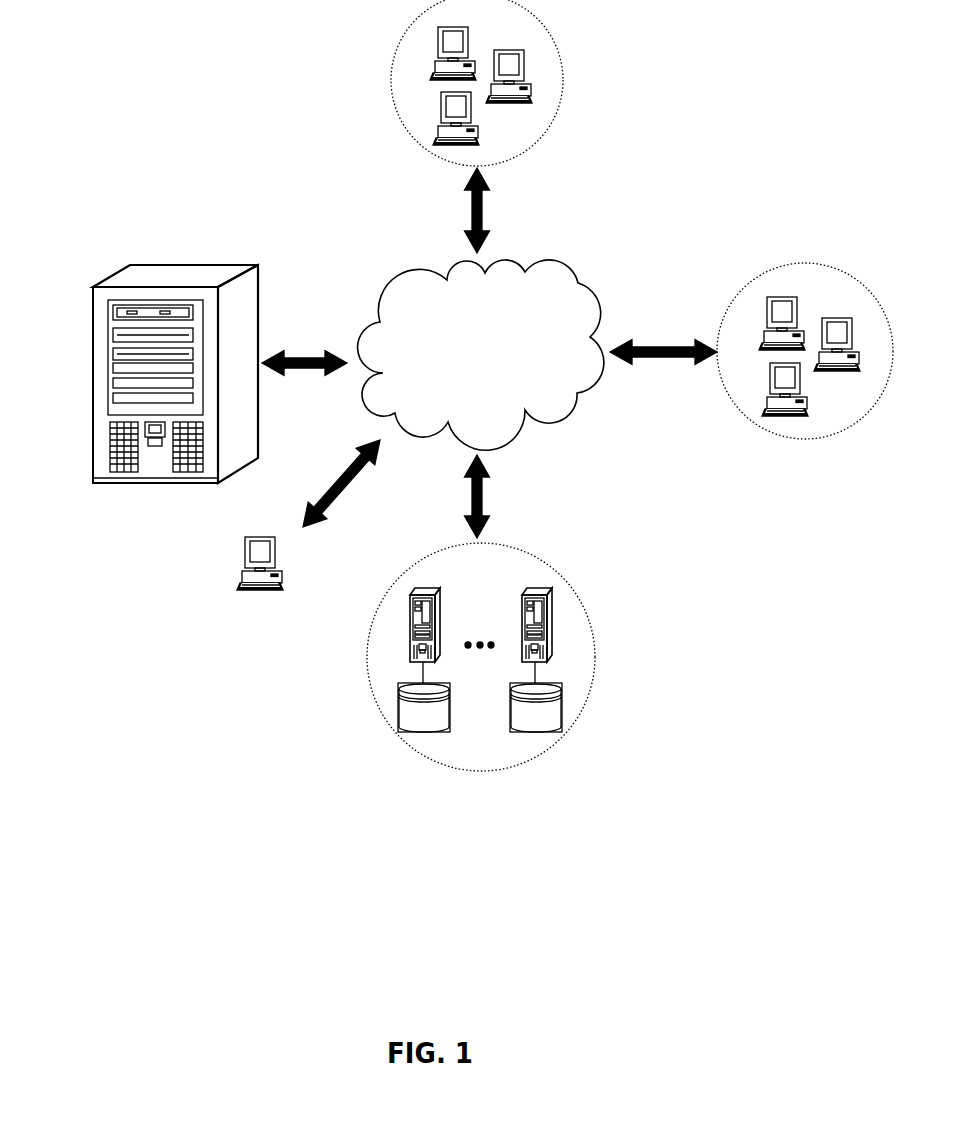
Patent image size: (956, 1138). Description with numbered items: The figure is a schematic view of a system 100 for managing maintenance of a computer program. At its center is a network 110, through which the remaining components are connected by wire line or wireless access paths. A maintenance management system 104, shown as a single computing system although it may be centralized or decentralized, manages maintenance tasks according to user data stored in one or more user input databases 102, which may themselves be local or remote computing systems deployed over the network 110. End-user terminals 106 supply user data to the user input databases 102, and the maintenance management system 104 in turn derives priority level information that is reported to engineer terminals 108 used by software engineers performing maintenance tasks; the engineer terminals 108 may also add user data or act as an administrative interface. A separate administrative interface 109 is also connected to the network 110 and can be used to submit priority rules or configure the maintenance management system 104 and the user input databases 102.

The system 100 is at (612, 828).
The user input databases 102 is at (375, 694).
The maintenance management system 104 is at (217, 285).
The end-user terminals 106 is at (762, 428).
The engineer terminals 108 is at (388, 70).
The administrative interface 109 is at (243, 580).
The network 110 is at (570, 263).